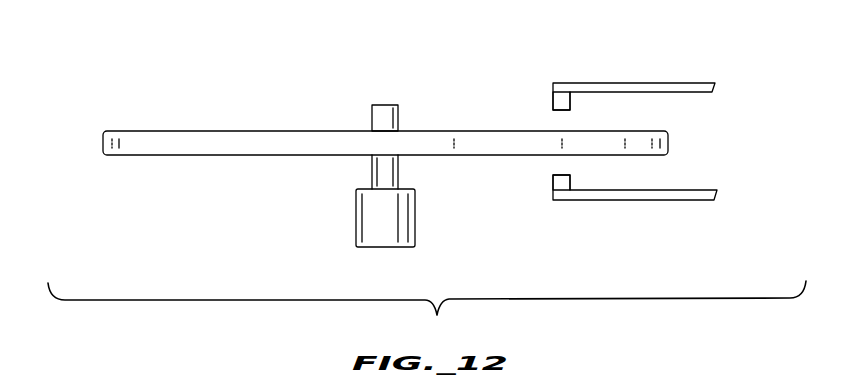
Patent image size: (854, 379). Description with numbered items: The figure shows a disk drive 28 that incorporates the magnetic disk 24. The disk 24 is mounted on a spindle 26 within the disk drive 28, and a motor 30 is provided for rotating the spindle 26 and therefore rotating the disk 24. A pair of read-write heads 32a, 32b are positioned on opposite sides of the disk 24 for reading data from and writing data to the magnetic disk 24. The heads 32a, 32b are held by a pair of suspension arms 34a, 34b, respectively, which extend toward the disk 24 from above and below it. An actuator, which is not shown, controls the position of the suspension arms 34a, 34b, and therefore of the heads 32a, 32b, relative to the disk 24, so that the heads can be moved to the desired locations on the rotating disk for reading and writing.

The disk 24 is at (132, 148).
The disk drive 28 is at (352, 88).
The spindle 26 is at (398, 118).
The motor 30 is at (356, 216).
The read-write head 32a is at (553, 103).
The suspension arm 34a is at (630, 83).
The read-write head 32b is at (553, 183).
The suspension arm 34b is at (625, 200).